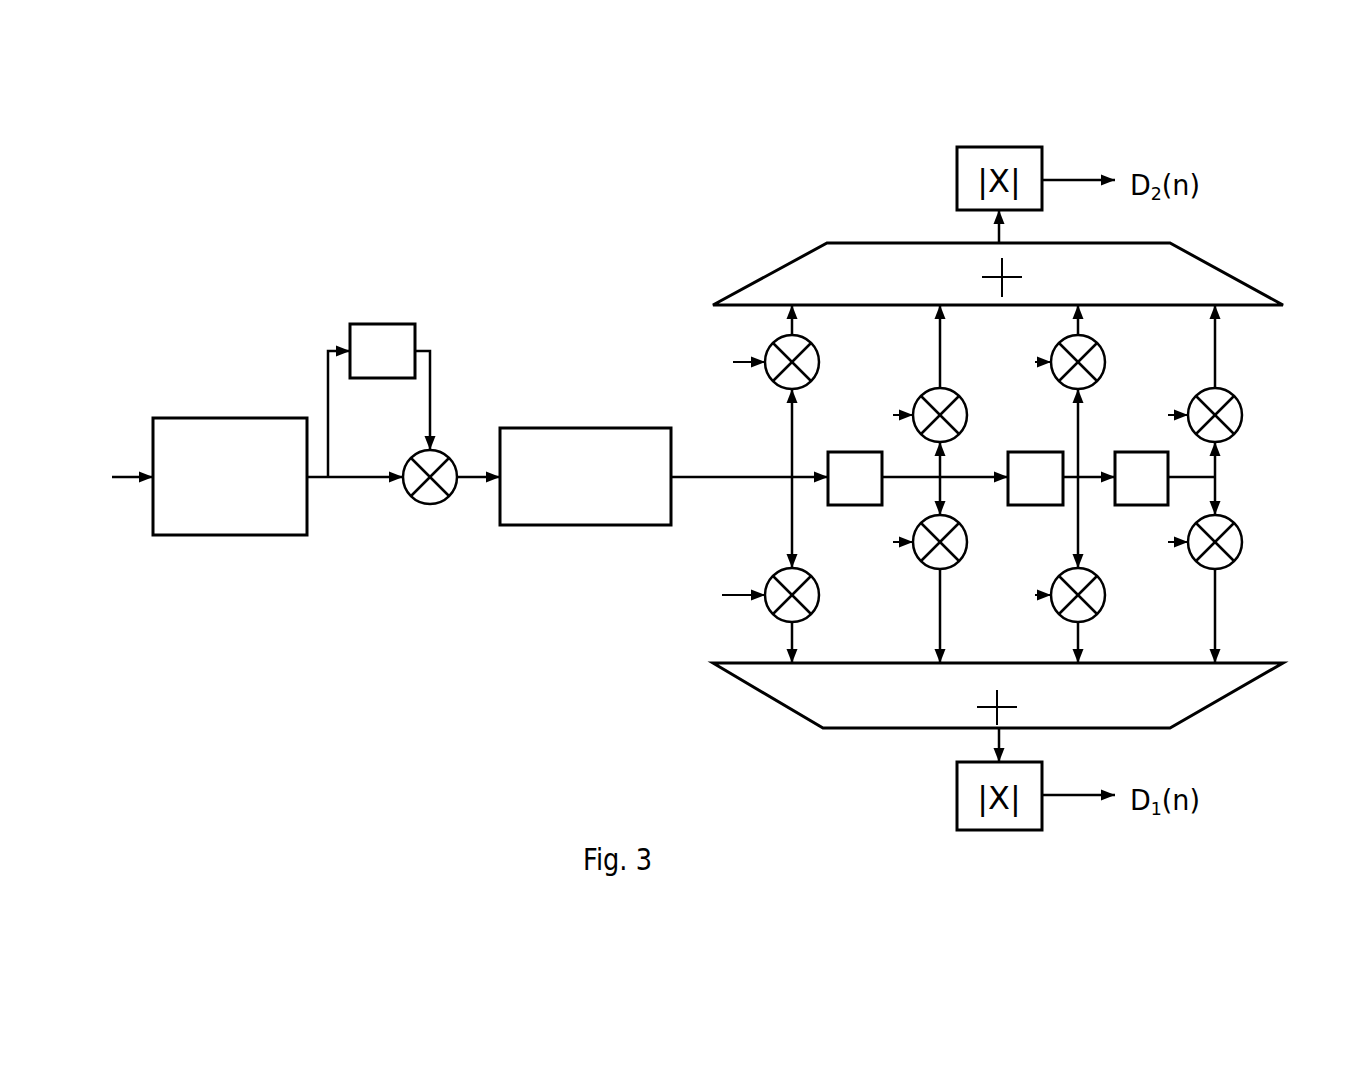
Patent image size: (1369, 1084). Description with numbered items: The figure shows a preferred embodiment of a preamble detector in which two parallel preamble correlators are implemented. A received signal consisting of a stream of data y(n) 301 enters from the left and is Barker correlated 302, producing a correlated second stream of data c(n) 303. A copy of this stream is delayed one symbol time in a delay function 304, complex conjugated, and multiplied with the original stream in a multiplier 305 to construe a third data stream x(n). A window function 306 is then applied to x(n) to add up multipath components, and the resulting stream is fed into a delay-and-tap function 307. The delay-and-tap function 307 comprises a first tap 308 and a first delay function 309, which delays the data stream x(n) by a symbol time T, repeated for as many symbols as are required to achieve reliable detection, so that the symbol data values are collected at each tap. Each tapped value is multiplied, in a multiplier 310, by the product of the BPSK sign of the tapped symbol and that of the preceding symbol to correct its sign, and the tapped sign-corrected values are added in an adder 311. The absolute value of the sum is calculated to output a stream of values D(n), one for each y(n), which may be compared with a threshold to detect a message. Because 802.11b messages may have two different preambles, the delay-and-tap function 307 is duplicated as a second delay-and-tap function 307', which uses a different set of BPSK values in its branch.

The stream of data y(n) 301 is at (118, 472).
The Barker correlation 302 is at (208, 418).
The correlated second stream of data c(n) 303 is at (318, 478).
The delay function 304 is at (380, 324).
The multiplier 305 is at (430, 505).
The window function 306 is at (568, 428).
The delay-and-tap function 307 is at (1008, 298).
The duplicated delay-and-tap function 307' is at (1006, 568).
The first tap 308 is at (790, 437).
The first delay function 309 is at (827, 503).
The multiplier 310 is at (780, 337).
The adder 311 is at (1227, 273).